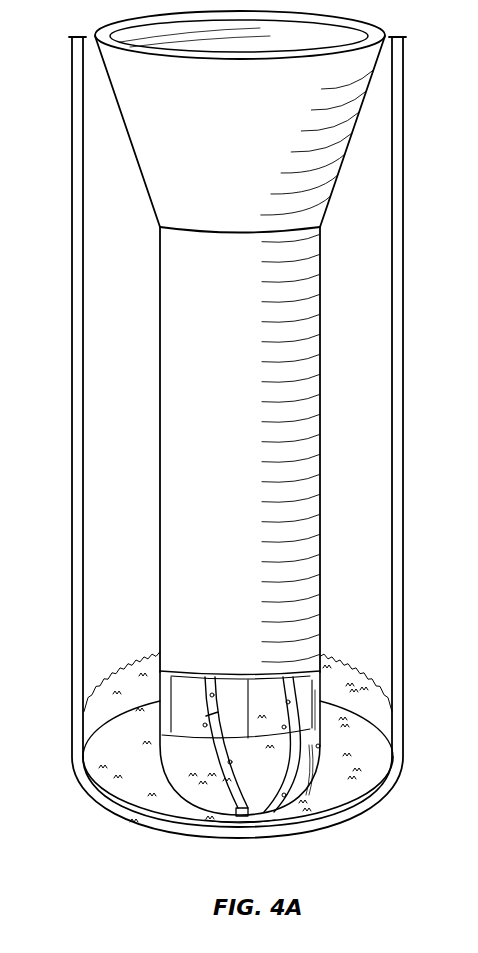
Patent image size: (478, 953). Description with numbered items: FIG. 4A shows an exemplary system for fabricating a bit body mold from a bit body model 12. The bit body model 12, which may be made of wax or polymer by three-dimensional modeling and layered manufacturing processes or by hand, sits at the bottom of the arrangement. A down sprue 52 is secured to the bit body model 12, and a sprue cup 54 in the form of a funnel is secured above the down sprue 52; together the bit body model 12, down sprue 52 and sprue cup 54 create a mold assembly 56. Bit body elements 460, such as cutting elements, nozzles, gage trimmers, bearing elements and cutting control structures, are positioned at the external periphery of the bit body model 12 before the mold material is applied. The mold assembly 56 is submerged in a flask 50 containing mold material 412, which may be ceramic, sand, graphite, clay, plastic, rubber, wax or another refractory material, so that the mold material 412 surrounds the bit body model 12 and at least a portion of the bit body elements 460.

The flask 50 is at (403, 383).
The down sprue 52 is at (160, 398).
The sprue cup 54 is at (355, 130).
The mold assembly 56 is at (105, 508).
The mold material 412 is at (103, 668).
The bit body elements 460 is at (208, 696).
The bit body model 12 is at (265, 817).